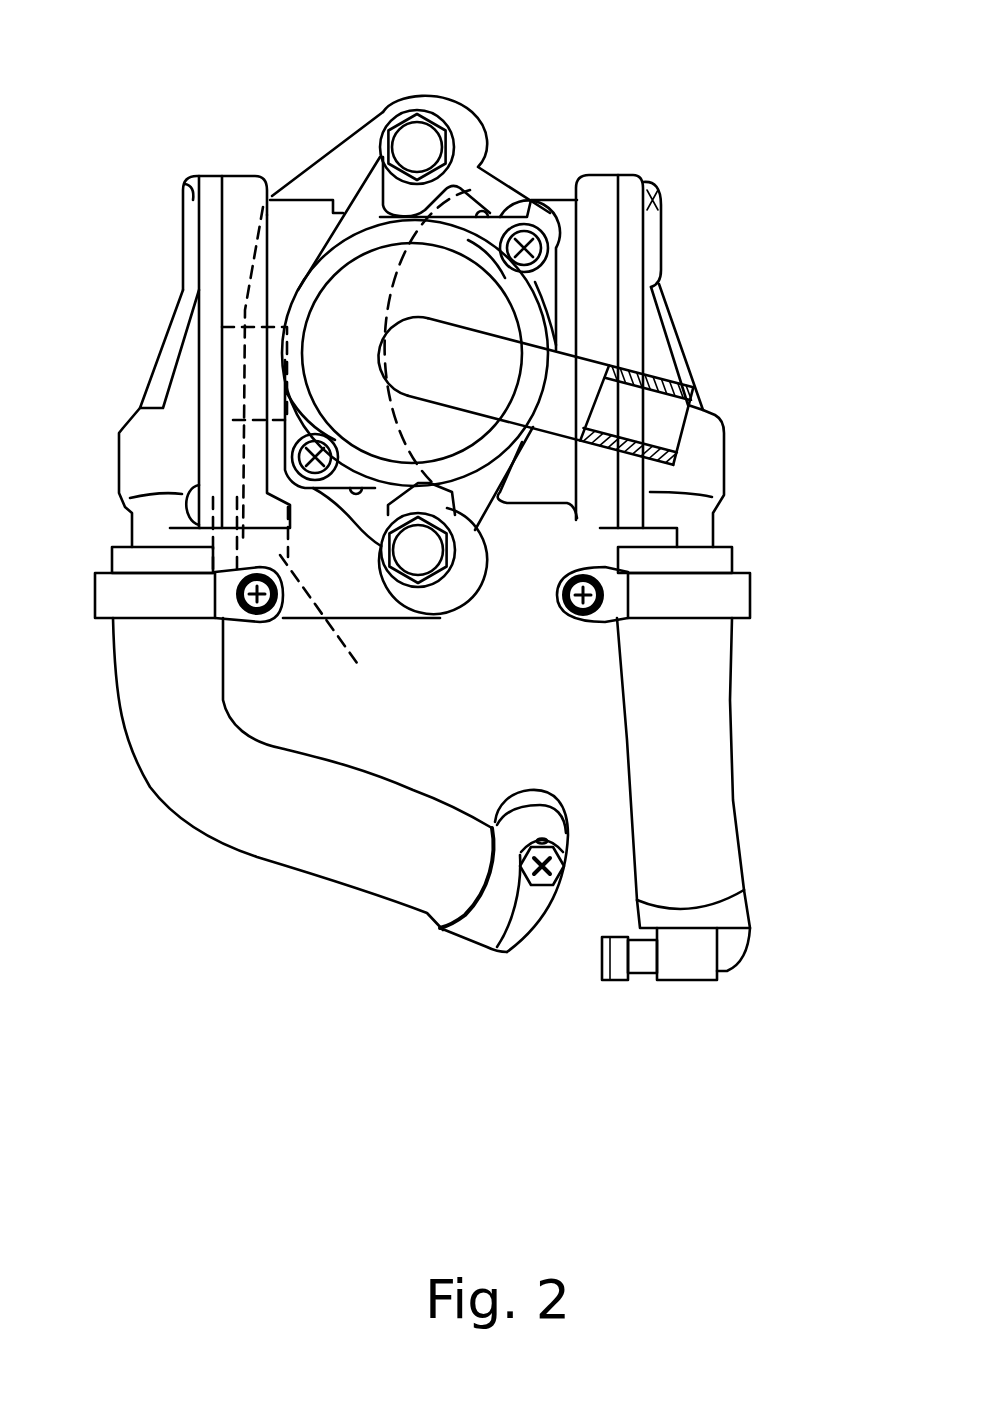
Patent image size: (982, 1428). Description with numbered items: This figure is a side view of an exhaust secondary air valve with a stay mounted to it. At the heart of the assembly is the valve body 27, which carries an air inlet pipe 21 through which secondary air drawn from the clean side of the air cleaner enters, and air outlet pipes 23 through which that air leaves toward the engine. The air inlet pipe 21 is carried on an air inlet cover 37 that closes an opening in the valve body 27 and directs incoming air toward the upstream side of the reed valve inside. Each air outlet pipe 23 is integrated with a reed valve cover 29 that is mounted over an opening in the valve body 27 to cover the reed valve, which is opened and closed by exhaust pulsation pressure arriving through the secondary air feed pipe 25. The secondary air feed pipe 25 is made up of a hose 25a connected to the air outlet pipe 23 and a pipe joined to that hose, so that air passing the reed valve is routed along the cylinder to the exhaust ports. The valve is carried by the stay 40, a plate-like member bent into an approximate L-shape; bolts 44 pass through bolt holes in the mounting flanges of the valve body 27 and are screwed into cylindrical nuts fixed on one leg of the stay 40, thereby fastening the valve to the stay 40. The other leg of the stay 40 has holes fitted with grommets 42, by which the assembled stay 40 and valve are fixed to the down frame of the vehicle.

The air inlet pipe 21 is at (545, 399).
The air outlet pipe 23 is at (150, 517).
The secondary air feed pipe 25 is at (193, 851).
The hose 25a is at (344, 823).
The valve body 27 is at (565, 489).
The reed valve cover 29 is at (166, 336).
The air inlet cover 37 is at (450, 302).
The stay 40 is at (339, 142).
The grommet 42 is at (240, 348).
The bolt 44 is at (423, 140).